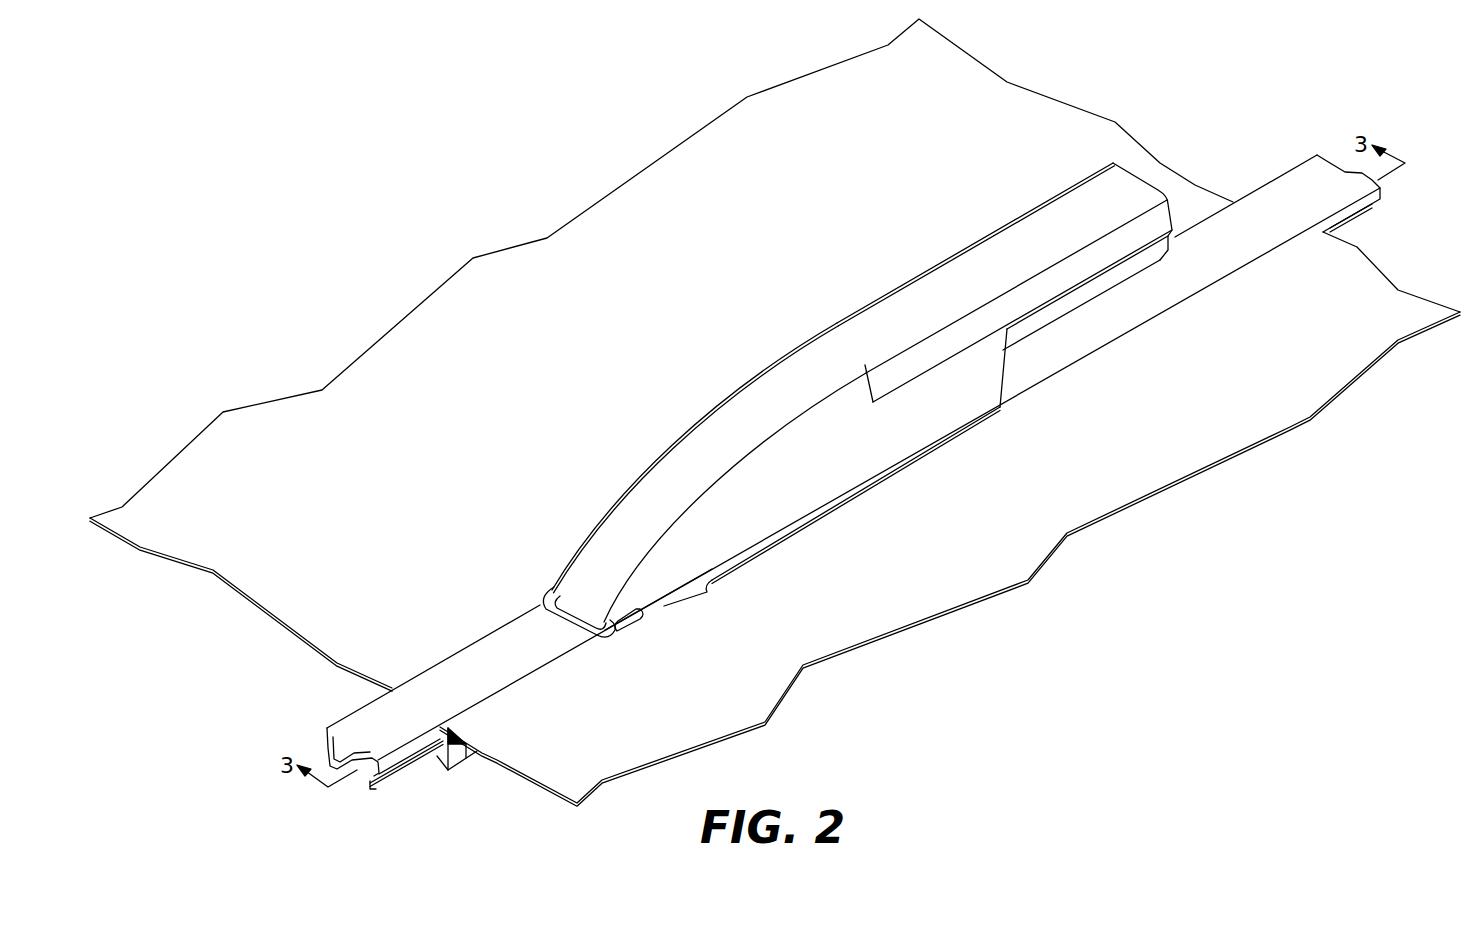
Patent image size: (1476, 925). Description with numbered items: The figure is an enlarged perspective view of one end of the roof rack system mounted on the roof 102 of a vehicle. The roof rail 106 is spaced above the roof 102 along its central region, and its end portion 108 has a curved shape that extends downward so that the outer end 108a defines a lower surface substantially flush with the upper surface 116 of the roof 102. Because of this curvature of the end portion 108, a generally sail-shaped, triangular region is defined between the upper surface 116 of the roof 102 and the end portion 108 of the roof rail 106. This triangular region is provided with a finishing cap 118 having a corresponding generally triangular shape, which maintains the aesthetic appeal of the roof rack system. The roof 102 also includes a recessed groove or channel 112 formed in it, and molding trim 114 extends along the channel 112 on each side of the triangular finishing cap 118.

The roof 102 is at (775, 412).
The roof rail 106 is at (997, 250).
The end portion 108 is at (768, 390).
The outer end 108a is at (632, 610).
The channel 112 is at (457, 750).
The molding trim 114 is at (487, 660).
The upper surface 116 is at (772, 603).
The finishing cap 118 is at (882, 442).